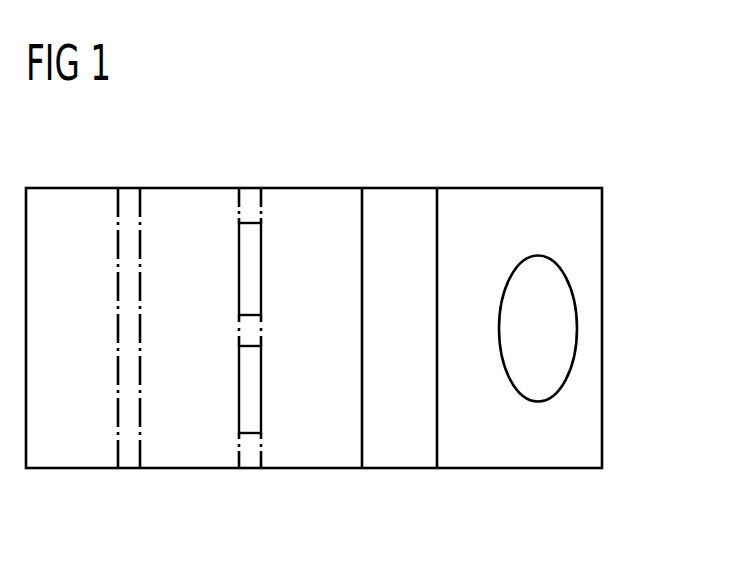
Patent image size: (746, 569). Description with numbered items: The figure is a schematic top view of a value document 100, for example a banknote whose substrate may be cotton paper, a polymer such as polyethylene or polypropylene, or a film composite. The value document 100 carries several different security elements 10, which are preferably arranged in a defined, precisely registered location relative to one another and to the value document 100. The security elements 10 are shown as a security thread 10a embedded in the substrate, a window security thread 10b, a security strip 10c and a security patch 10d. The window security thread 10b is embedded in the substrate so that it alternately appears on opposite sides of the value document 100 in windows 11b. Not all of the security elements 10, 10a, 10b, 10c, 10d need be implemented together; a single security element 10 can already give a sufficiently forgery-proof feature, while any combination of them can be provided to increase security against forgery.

The value document 100 is at (543, 144).
The security elements 10 is at (397, 362).
The security thread 10a is at (128, 462).
The window security thread 10b is at (271, 362).
The security strip 10c is at (397, 461).
The security patch 10d is at (563, 327).
The windows 11b is at (250, 387).